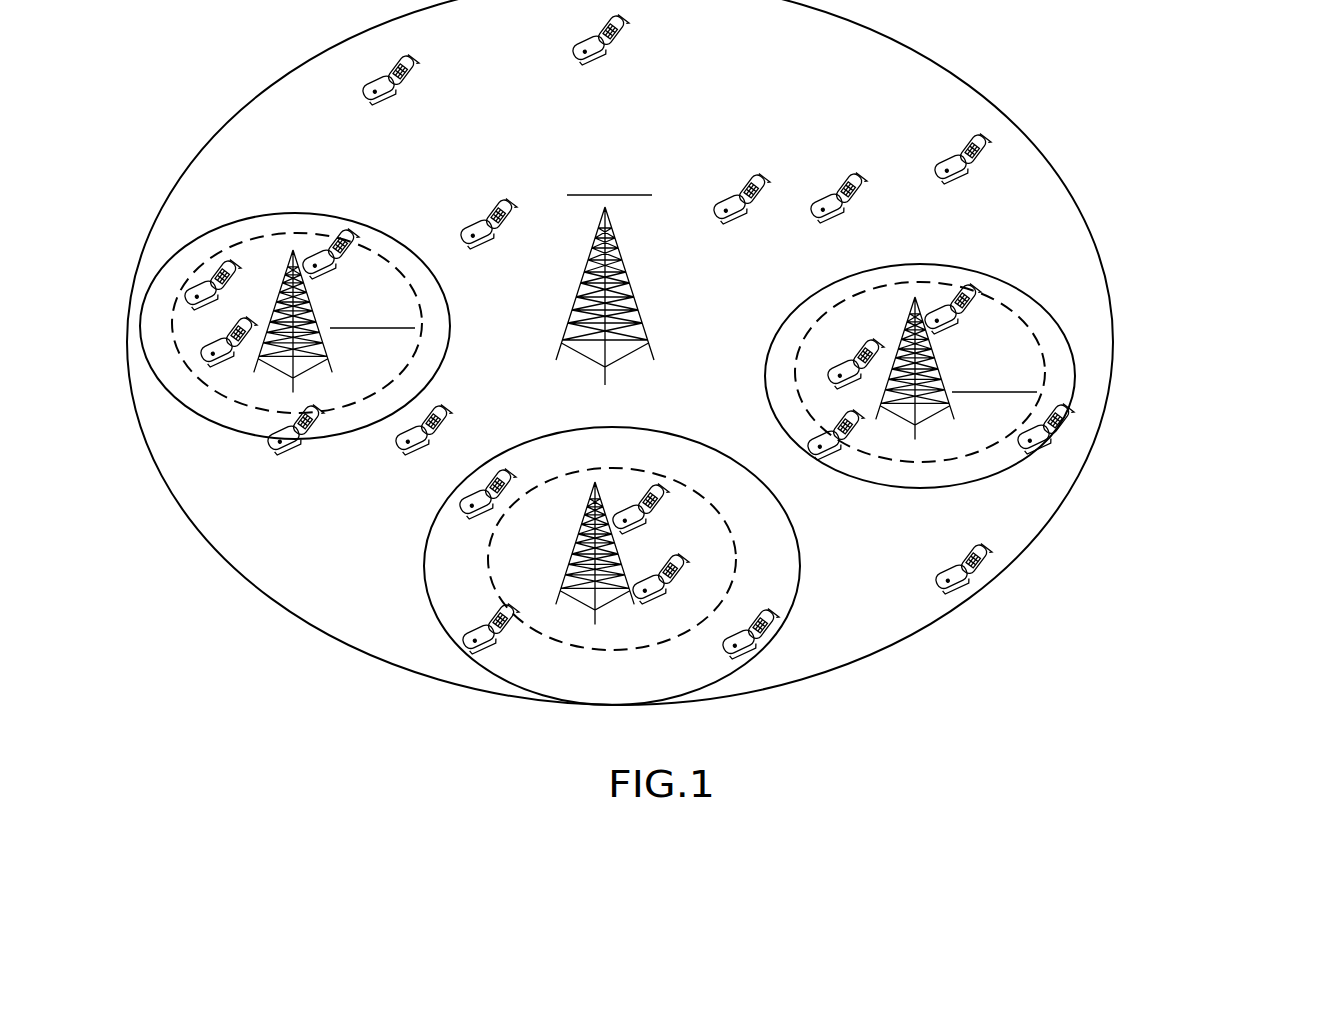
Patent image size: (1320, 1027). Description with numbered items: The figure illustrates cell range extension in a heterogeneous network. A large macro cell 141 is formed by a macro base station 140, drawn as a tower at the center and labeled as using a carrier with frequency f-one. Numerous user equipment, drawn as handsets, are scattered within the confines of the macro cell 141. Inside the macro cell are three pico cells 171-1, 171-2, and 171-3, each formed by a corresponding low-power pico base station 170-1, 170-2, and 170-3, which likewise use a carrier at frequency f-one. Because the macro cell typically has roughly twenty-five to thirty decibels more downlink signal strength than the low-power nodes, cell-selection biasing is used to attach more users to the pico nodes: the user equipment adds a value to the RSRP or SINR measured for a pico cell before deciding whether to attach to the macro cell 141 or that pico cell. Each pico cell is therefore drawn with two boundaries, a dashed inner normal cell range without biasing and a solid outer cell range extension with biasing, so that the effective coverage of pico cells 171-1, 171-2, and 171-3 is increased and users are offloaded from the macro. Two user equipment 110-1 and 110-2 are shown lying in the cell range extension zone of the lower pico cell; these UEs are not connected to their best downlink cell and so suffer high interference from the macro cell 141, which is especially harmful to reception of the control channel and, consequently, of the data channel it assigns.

The macro cell 141 is at (1052, 168).
The macro base station 140 is at (605, 378).
The pico base station 170-1 is at (595, 612).
The pico base station 170-2 is at (915, 427).
The pico base station 170-3 is at (312, 362).
The pico cell 171-1 is at (562, 620).
The pico cell 171-2 is at (1025, 350).
The pico cell 171-3 is at (275, 215).
The user equipment 110-1 is at (467, 647).
The user equipment 110-2 is at (772, 633).